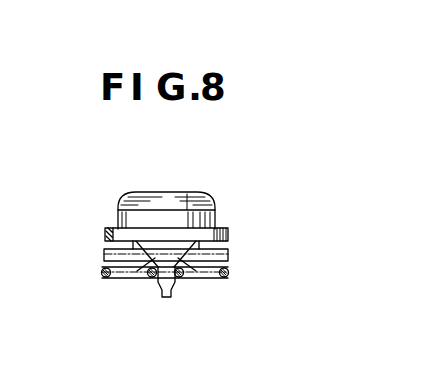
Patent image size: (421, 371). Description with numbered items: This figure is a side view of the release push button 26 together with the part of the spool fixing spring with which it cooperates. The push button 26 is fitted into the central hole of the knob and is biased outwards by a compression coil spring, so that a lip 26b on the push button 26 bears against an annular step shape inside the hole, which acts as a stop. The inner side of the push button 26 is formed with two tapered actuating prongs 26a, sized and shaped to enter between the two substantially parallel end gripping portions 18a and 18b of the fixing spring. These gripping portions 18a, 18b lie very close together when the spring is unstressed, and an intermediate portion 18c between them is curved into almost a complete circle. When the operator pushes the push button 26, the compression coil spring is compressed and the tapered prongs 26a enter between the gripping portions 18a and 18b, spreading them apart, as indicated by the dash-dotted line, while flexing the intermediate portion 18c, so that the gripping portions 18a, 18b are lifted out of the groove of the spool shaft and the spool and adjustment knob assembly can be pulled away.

The push button 26 is at (131, 194).
The tapered actuating prongs 26a is at (201, 259).
The lip 26b is at (104, 237).
The end gripping portion 18a is at (149, 283).
The end gripping portion 18b is at (183, 283).
The intermediate portion 18c is at (104, 277).